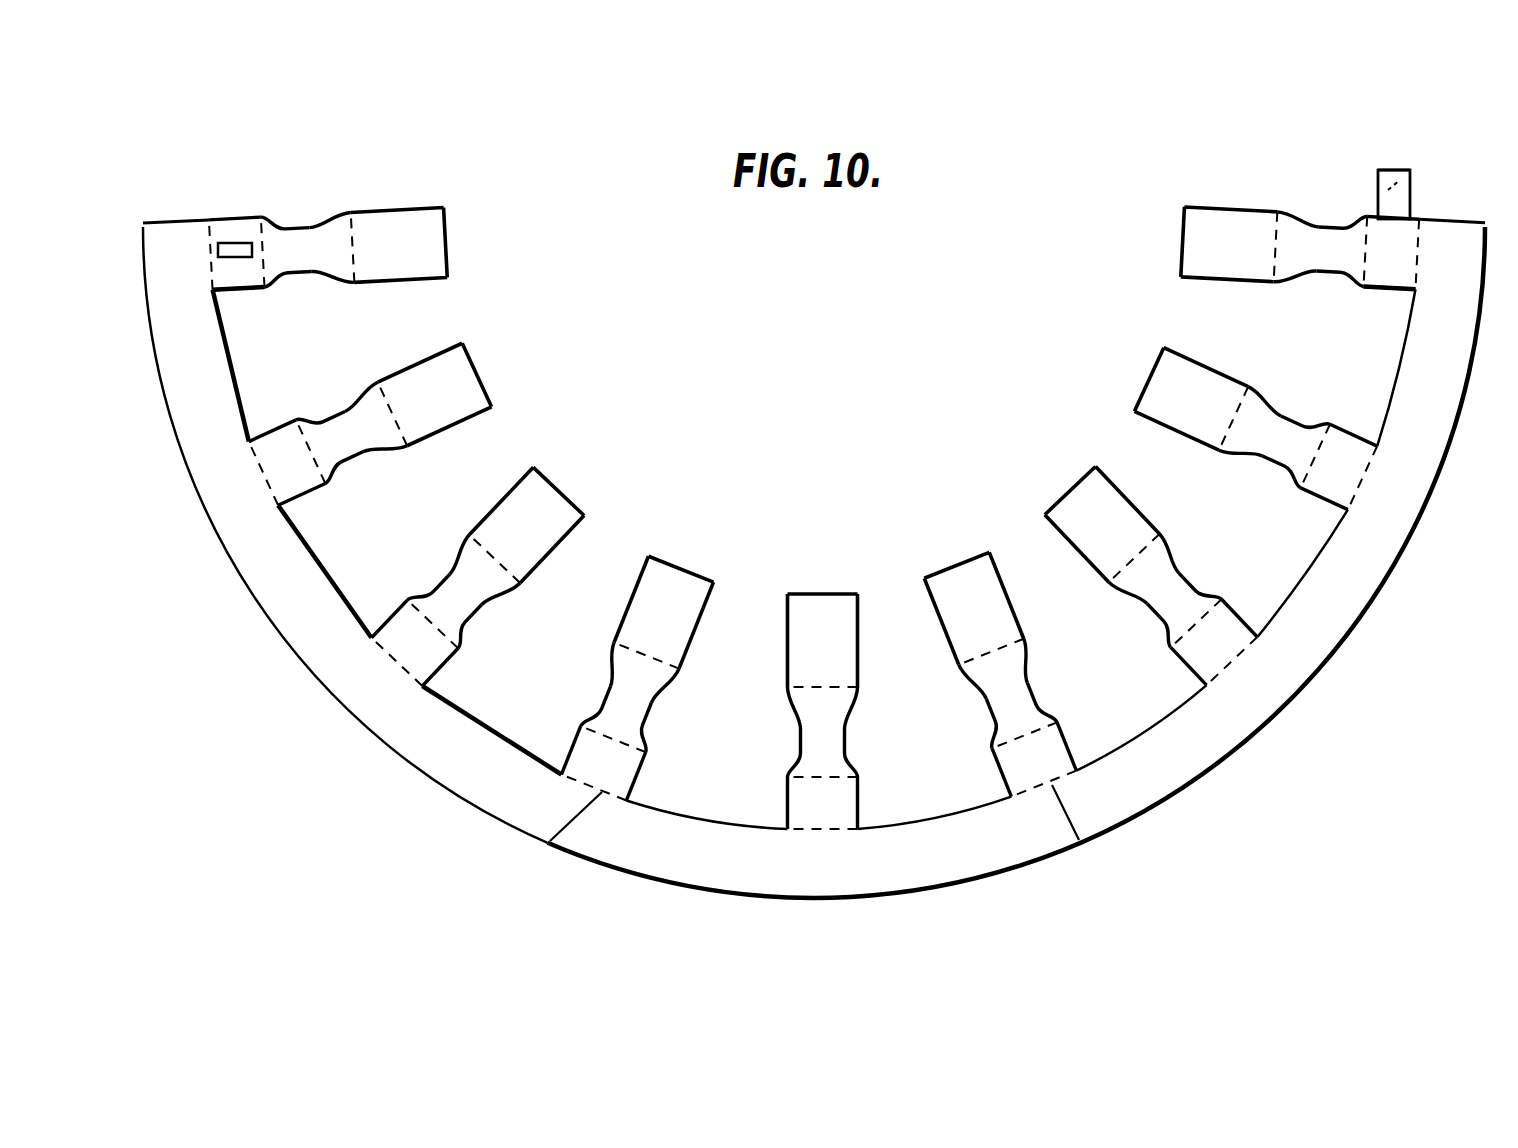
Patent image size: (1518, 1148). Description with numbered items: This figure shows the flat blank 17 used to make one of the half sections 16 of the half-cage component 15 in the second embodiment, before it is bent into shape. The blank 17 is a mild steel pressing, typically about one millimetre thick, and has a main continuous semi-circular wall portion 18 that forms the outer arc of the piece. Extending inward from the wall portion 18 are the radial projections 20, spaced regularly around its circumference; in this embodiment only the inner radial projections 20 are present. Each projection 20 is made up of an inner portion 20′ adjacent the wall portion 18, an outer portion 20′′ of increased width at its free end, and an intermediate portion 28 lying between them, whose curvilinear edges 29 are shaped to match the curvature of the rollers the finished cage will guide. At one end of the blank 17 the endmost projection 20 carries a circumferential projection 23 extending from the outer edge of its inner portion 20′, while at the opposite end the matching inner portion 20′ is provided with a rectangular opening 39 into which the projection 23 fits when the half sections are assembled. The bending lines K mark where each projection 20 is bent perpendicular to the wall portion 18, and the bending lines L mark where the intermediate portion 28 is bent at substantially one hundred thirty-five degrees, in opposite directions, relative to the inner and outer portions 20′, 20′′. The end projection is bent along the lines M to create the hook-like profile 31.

The half-cage component 15 is at (258, 653).
The half section 16 is at (420, 760).
The blank 17 is at (500, 327).
The main wall portion 18 is at (175, 228).
The radial projection 20 is at (313, 222).
The inner portion 20′ is at (313, 146).
The outer portion 20′′ is at (500, 146).
The circumferential projection 23 is at (1390, 170).
The intermediate portion 28 is at (347, 418).
The curvilinear edges 29 is at (368, 455).
The hook-like profile 31 is at (1397, 198).
The rectangular opening 39 is at (243, 257).
The bending lines K is at (550, 841).
The bending lines L is at (493, 542).
The bending lines M is at (1388, 218).